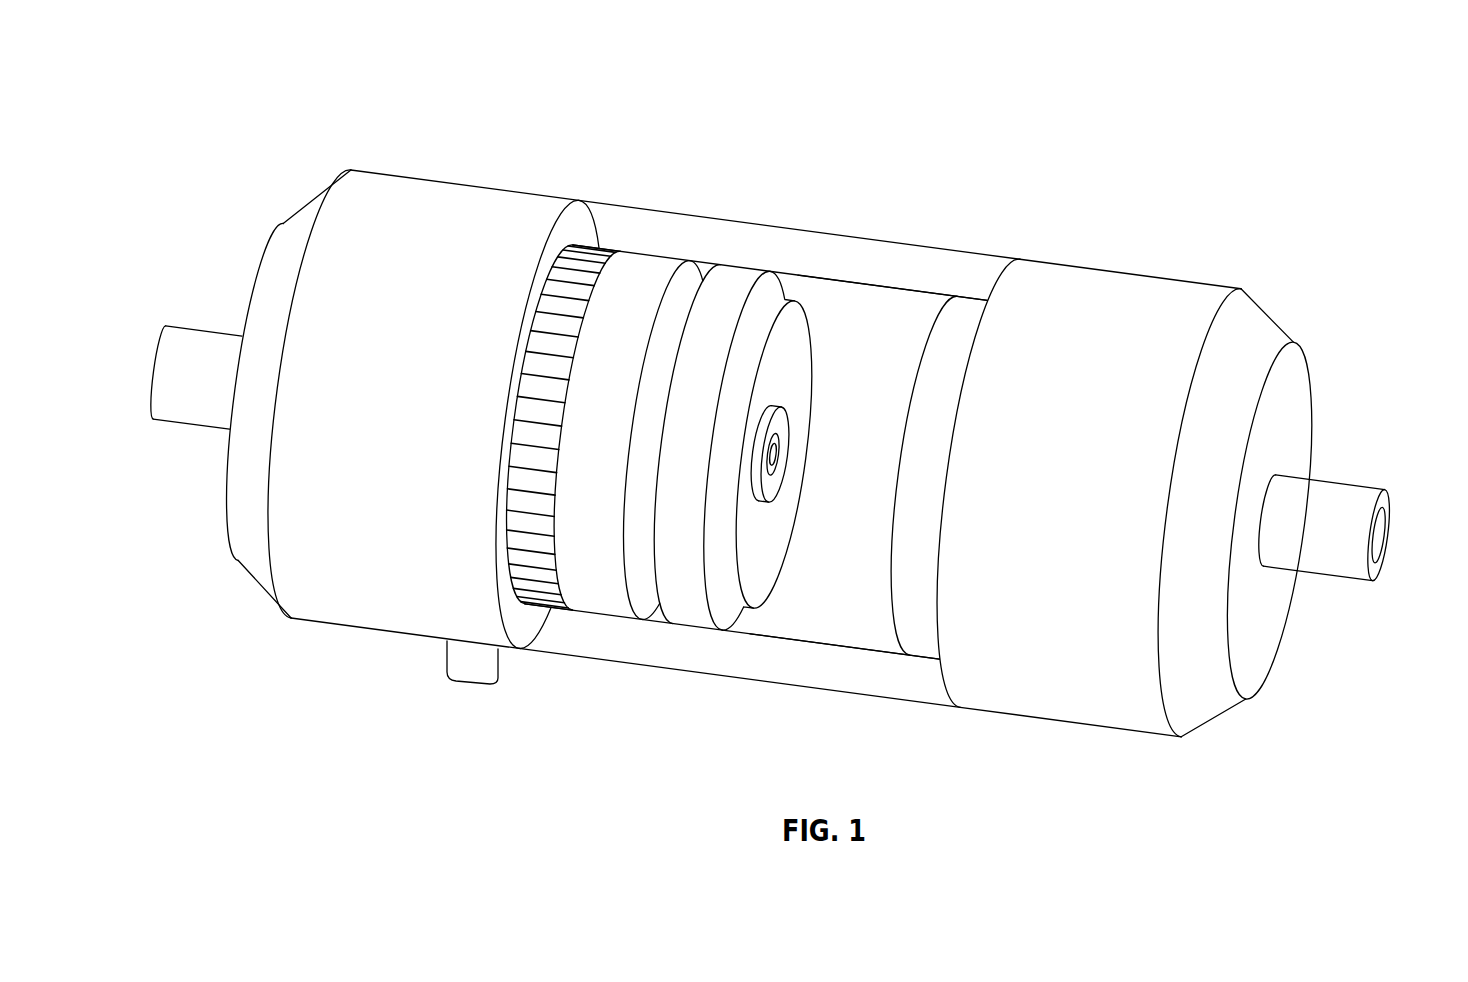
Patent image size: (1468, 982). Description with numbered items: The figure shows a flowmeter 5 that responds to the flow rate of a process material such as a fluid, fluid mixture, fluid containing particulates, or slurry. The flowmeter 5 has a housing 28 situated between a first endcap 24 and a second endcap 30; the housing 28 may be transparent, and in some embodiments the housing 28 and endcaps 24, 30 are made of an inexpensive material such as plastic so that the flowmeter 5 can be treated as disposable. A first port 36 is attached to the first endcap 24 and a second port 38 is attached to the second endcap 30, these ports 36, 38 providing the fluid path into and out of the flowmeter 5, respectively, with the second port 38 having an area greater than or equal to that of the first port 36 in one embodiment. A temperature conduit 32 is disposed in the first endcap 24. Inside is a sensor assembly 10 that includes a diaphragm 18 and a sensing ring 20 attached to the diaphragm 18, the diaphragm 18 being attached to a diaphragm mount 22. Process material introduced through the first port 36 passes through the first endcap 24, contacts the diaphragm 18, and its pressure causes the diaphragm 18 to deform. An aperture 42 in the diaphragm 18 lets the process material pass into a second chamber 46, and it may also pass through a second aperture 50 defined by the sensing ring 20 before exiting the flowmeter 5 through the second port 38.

The flowmeter 5 is at (427, 70).
The sensor assembly 10 is at (838, 334).
The diaphragm 18 is at (768, 568).
The sensing ring 20 is at (779, 415).
The diaphragm mount 22 is at (602, 593).
The first endcap 24 is at (455, 176).
The housing 28 is at (930, 700).
The second endcap 30 is at (1137, 282).
The temperature conduit 32 is at (470, 683).
The first port 36 is at (152, 372).
The second port 38 is at (1378, 530).
The aperture 42 is at (774, 452).
The second chamber 46 is at (843, 455).
The second aperture 50 is at (777, 462).